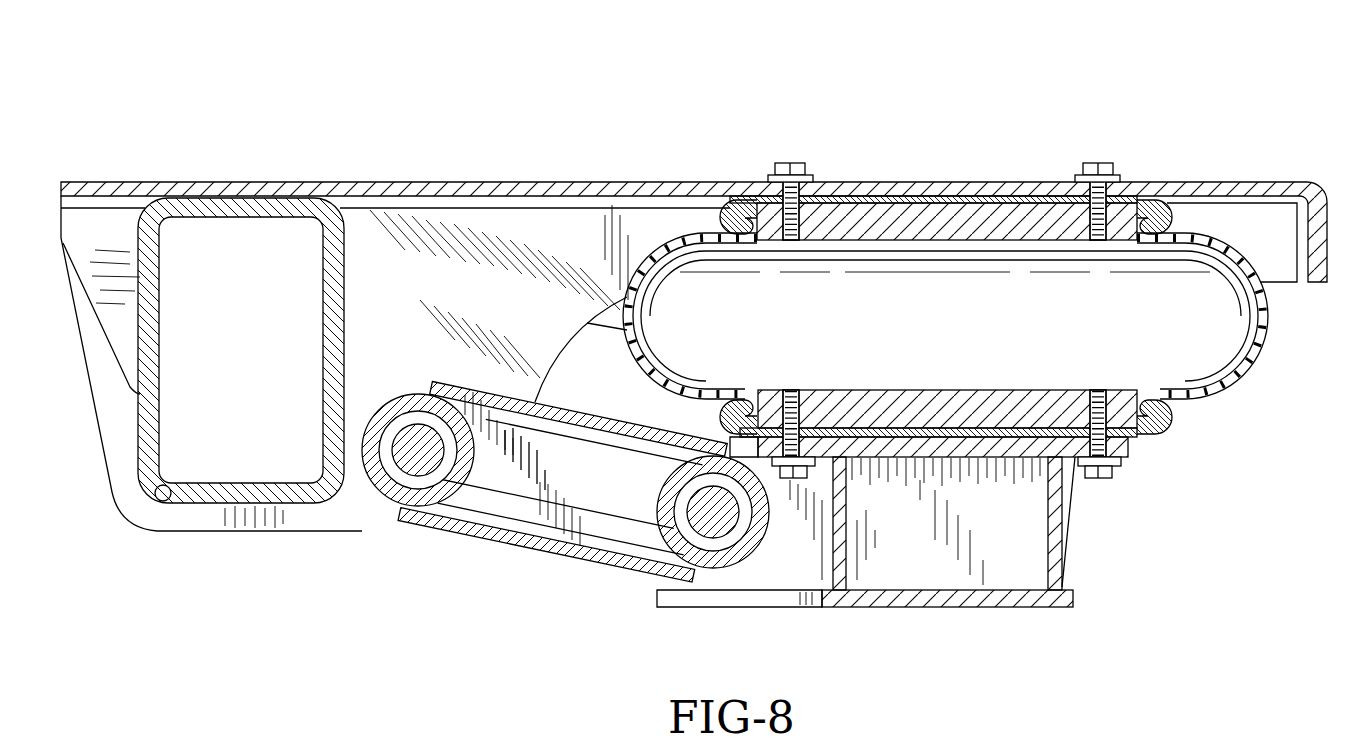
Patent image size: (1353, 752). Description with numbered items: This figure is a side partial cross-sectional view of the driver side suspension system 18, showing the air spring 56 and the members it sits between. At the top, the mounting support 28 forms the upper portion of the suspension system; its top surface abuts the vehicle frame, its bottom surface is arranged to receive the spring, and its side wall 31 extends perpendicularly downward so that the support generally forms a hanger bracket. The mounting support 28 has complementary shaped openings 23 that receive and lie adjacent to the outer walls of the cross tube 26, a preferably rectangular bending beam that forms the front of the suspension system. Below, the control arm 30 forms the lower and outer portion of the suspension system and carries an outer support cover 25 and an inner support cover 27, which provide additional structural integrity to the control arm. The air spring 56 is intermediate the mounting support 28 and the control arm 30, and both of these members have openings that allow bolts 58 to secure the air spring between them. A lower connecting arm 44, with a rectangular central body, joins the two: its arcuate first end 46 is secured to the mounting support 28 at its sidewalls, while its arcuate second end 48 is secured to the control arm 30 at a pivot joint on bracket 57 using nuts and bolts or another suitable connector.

The driver side suspension system 18 is at (978, 68).
The mounting support 28 is at (506, 170).
The inner side wall 31 is at (1252, 221).
The cross tube 26 is at (218, 495).
The openings 23 is at (170, 505).
The lower connecting arm 44 is at (547, 578).
The first end 46 is at (372, 482).
The second end 48 is at (768, 536).
The air spring 56 is at (1220, 392).
The inner support cover 27 is at (982, 445).
The bolts 58 is at (791, 162).
The control arm 30 is at (1078, 548).
The outer support cover 25 is at (1003, 607).
The bracket 57 is at (775, 568).